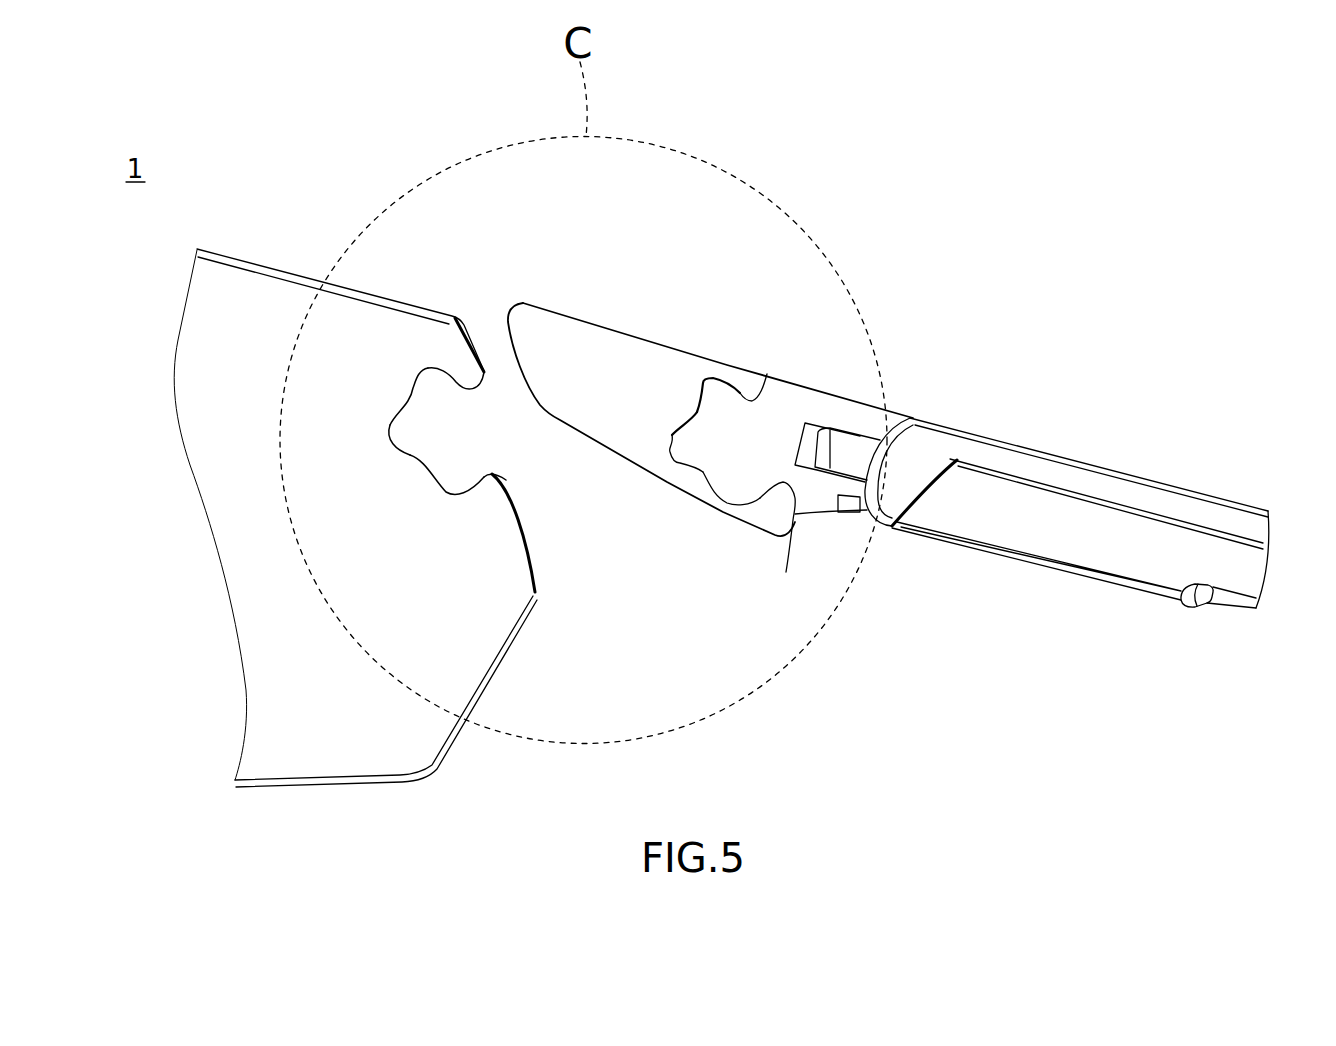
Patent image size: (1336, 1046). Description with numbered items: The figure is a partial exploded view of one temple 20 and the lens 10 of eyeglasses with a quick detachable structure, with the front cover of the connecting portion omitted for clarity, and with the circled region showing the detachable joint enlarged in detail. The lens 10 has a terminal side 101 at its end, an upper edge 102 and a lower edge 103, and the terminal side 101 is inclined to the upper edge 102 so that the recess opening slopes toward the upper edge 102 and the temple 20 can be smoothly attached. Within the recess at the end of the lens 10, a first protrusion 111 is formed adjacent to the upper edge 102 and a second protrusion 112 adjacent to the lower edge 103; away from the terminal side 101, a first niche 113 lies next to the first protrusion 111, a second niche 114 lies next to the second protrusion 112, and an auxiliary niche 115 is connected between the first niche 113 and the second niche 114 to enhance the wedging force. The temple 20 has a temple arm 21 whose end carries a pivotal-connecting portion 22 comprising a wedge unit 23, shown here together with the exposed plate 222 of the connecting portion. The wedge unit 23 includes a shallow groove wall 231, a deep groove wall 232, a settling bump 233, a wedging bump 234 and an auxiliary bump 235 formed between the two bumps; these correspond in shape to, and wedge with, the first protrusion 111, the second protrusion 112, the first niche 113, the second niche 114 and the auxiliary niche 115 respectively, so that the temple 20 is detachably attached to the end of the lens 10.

The lens 10 is at (262, 282).
The terminal side 101 is at (483, 318).
The upper edge 102 is at (315, 283).
The lower edge 103 is at (368, 780).
The first protrusion 111 is at (458, 352).
The second protrusion 112 is at (498, 493).
The first niche 113 is at (423, 368).
The second niche 114 is at (448, 497).
The auxiliary niche 115 is at (385, 430).
The temple 20 is at (888, 446).
The temple arm 21 is at (1025, 455).
The pivotal-connecting portion 22 is at (905, 402).
The plate 222 is at (575, 347).
The wedge unit 23 is at (753, 455).
The shallow groove wall 231 is at (752, 397).
The deep groove wall 232 is at (778, 525).
The settling bump 233 is at (712, 395).
The wedging bump 234 is at (735, 505).
The auxiliary bump 235 is at (678, 440).